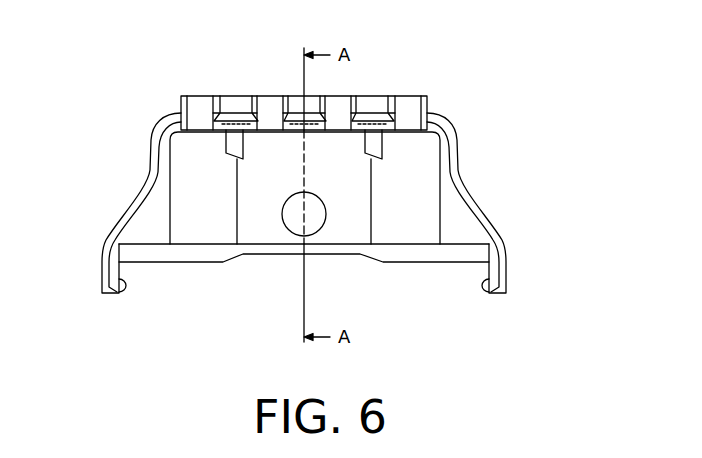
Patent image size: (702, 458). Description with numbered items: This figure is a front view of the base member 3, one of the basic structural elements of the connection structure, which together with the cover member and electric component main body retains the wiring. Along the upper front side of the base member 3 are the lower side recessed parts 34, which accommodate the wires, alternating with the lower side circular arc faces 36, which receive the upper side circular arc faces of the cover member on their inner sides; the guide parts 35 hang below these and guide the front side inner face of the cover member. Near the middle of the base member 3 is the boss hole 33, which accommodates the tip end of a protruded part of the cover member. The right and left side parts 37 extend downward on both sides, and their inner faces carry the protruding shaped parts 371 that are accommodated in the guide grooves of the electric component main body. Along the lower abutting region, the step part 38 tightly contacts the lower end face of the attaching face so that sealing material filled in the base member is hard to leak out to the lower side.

The base member 3 is at (468, 118).
The boss hole 33 is at (289, 210).
The lower side recessed part 34 is at (200, 110).
The guide part 35 is at (238, 109).
The lower side circular arc face 36 is at (232, 104).
The side part 37 is at (102, 262).
The step part 38 is at (397, 254).
The protruding shaped part 371 is at (128, 288).